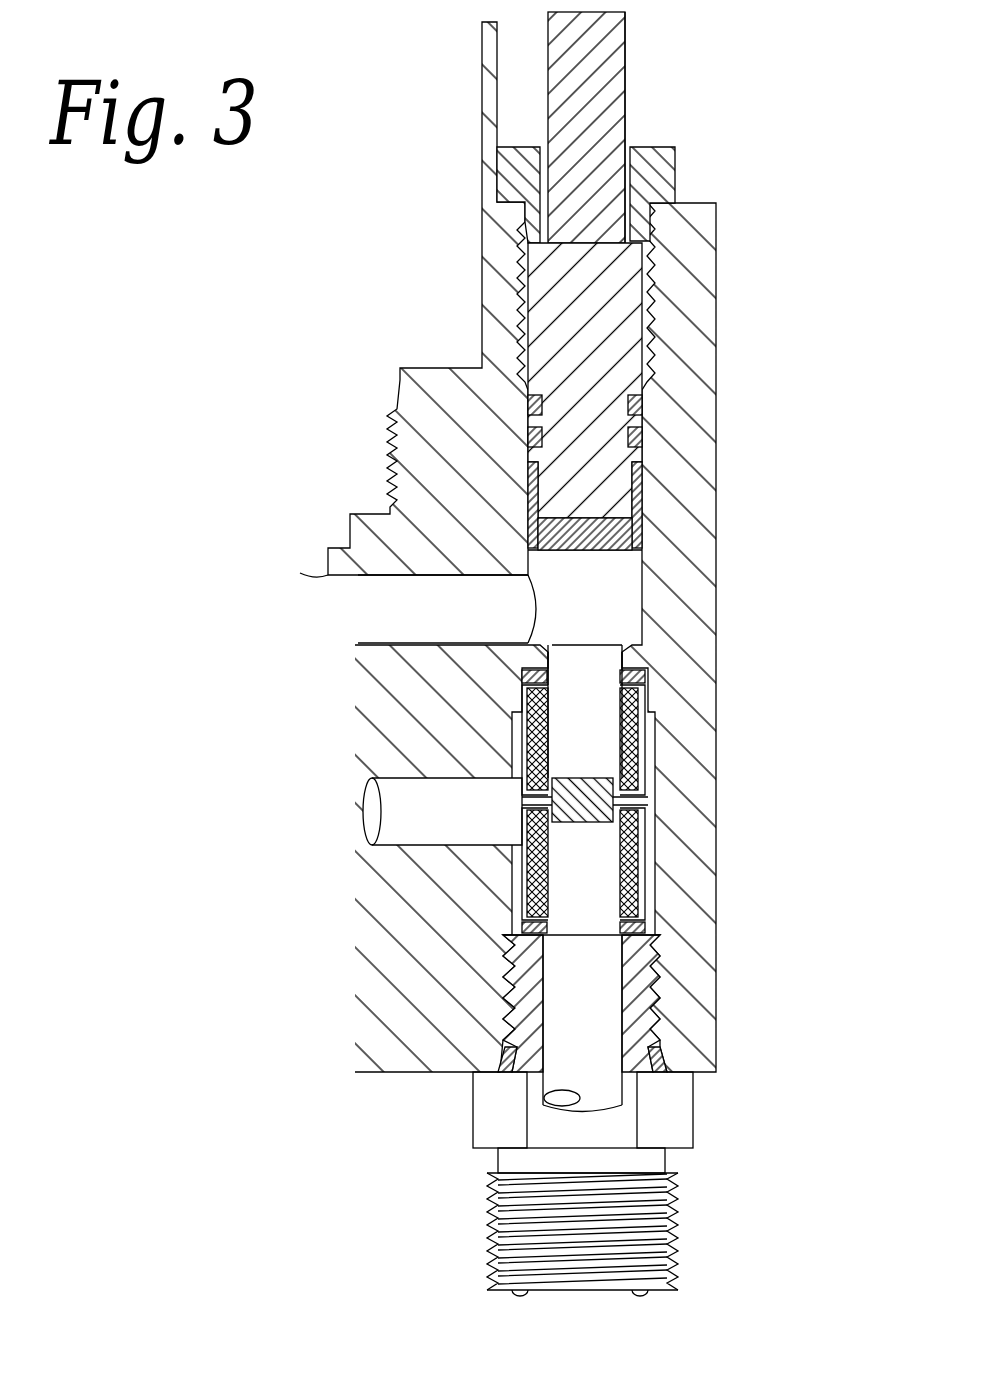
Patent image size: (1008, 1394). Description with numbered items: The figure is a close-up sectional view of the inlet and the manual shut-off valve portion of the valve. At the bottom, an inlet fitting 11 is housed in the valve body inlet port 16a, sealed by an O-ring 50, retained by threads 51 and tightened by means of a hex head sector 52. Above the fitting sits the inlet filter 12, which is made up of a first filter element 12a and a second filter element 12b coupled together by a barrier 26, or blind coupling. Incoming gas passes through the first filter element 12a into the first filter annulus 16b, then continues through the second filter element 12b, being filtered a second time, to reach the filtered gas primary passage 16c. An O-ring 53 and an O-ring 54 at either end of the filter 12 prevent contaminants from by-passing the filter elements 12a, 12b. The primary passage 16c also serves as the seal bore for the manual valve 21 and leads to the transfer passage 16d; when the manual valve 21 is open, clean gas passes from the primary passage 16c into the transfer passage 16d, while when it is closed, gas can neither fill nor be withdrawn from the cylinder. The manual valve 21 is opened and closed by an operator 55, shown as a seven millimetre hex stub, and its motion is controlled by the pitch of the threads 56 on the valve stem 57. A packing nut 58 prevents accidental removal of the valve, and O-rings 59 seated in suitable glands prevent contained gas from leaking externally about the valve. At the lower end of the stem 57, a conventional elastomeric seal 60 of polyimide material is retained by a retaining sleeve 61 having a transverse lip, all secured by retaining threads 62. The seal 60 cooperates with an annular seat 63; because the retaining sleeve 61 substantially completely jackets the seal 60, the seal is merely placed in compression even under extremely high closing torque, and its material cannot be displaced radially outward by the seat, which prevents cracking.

The inlet fitting 11 is at (622, 1098).
The inlet filter 12 is at (605, 808).
The first filter element 12a is at (630, 700).
The second filter element 12b is at (635, 875).
The valve body inlet port 16a is at (612, 1004).
The first filter annulus 16b is at (640, 742).
The filtered gas primary passage 16c is at (620, 624).
The transfer passage 16d is at (425, 632).
The manual valve 21 is at (625, 107).
The barrier 26 is at (650, 803).
The O-ring 50 is at (655, 1060).
The threads 51 is at (655, 1000).
The hex head sector 52 is at (490, 1118).
The O-ring 53 is at (645, 928).
The O-ring 54 is at (655, 625).
The operator 55 is at (597, 60).
The threads 56 is at (663, 318).
The valve stem 57 is at (587, 300).
The packing nut 58 is at (660, 172).
The O-rings 59 is at (645, 400).
The elastomeric seal 60 is at (648, 578).
The retaining sleeve 61 is at (648, 537).
The retaining threads 62 is at (645, 470).
The annular seat 63 is at (640, 660).